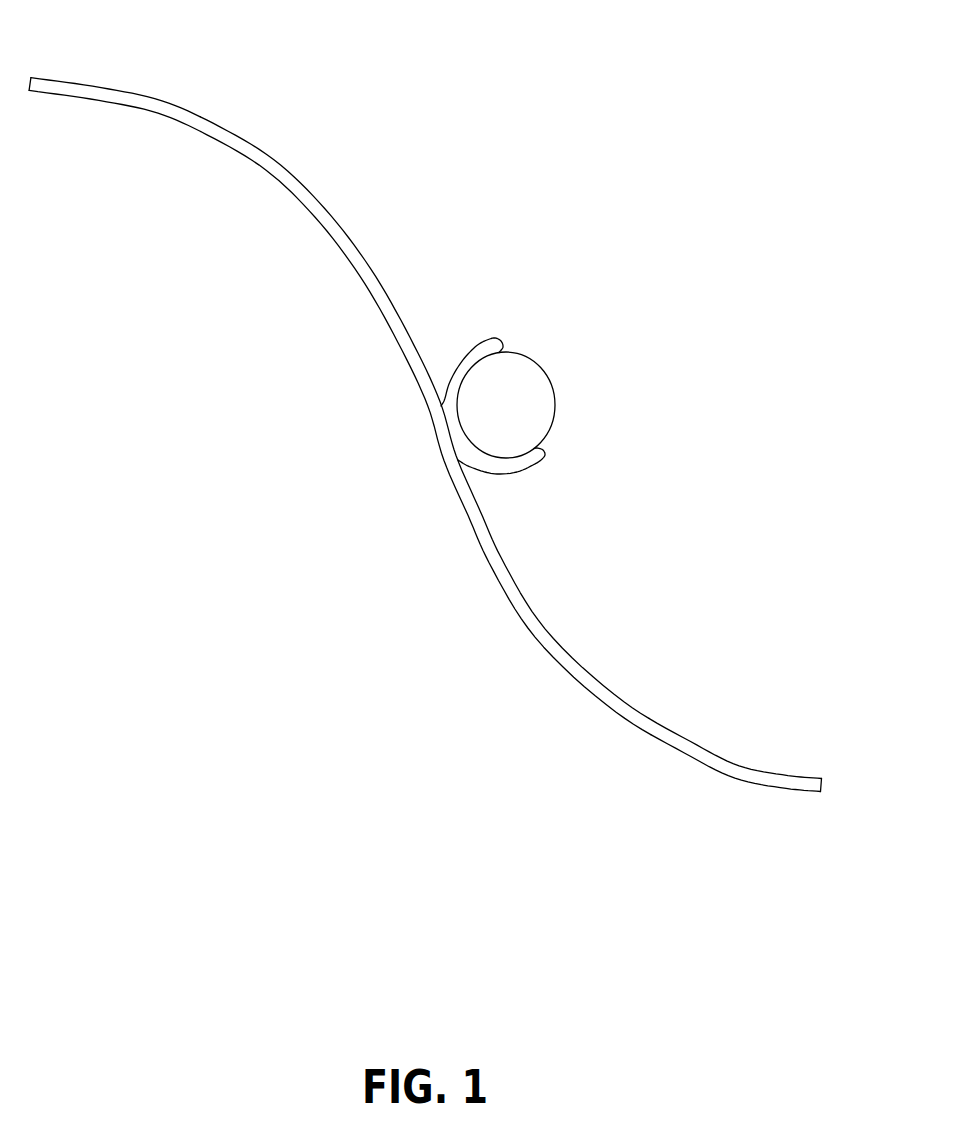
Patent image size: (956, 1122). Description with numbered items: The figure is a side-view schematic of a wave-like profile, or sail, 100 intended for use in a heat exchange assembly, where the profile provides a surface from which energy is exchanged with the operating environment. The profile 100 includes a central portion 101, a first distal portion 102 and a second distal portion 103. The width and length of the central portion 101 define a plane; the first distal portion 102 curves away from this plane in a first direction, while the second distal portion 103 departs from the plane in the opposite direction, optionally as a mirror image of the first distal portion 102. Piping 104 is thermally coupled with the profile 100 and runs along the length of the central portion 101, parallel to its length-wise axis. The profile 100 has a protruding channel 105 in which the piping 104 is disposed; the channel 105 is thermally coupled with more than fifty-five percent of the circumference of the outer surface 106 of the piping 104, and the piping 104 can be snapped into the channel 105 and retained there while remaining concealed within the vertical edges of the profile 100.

The profile 100 is at (445, 580).
The central portion 101 is at (432, 442).
The first distal portion 102 is at (163, 93).
The second distal portion 103 is at (737, 778).
The piping 104 is at (513, 373).
The protruding channel 105 is at (478, 343).
The outer surface 106 is at (553, 400).